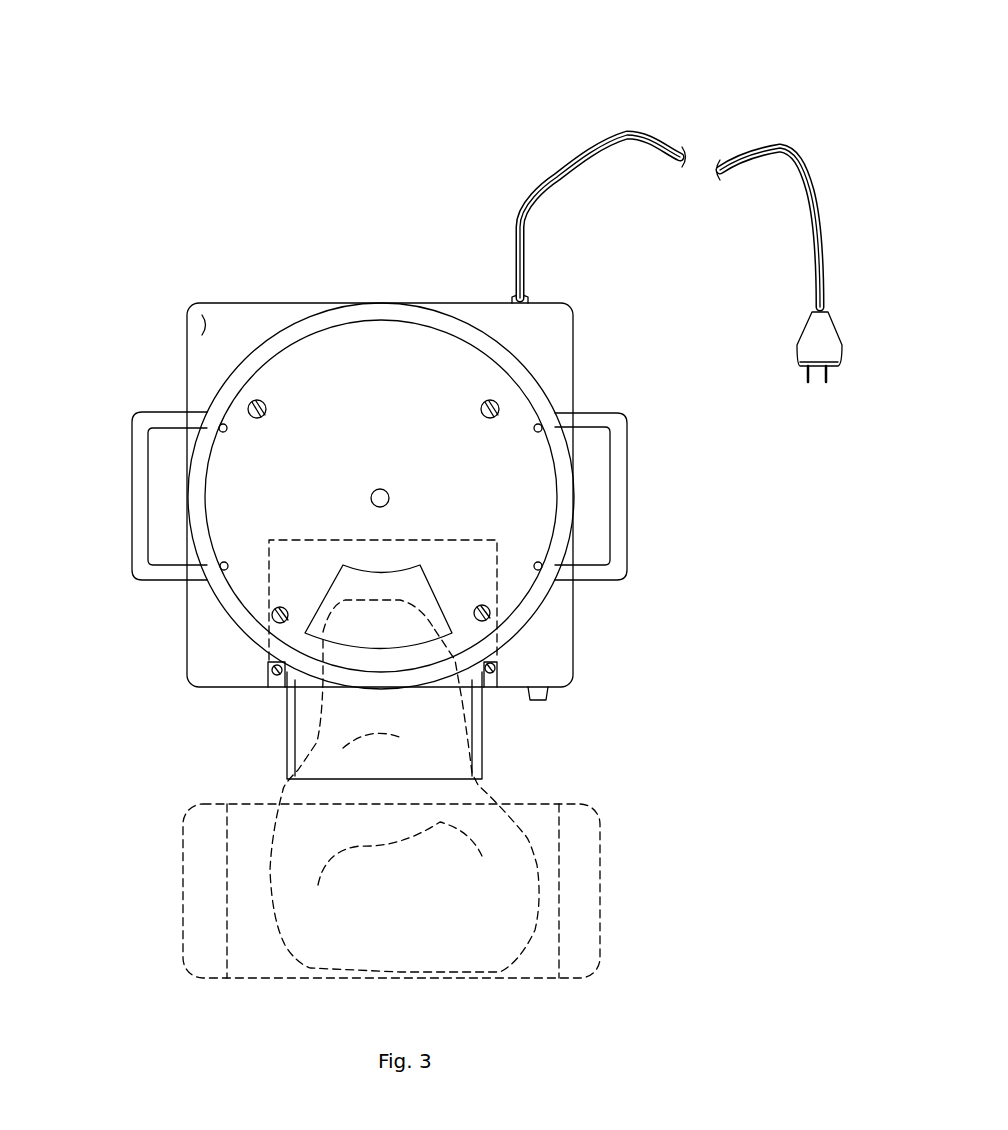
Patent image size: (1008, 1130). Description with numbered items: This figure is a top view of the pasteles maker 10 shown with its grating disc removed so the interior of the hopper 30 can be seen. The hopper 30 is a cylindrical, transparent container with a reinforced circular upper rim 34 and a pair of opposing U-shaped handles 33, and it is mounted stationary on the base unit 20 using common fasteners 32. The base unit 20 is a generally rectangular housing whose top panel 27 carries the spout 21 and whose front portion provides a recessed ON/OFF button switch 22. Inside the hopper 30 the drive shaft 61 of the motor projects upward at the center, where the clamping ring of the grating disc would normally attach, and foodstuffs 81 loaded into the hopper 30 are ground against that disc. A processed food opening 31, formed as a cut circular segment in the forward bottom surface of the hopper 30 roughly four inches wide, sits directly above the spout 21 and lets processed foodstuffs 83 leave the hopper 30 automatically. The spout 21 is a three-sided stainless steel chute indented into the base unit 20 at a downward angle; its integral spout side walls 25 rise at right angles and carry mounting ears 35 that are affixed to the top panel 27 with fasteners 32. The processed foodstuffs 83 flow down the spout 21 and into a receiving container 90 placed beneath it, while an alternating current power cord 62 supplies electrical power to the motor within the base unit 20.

The pasteles maker 10 is at (150, 112).
The base unit 20 is at (156, 632).
The spout 21 is at (415, 540).
The ON/OFF button switch 22 is at (546, 700).
The spout side wall 25 is at (283, 713).
The top panel 27 is at (200, 327).
The hopper 30 is at (287, 325).
The processed food opening 31 is at (418, 648).
The fastener 32 is at (282, 607).
The handle 33 is at (132, 470).
The rim 34 is at (531, 398).
The mounting ear 35 is at (497, 663).
The drive shaft 61 is at (376, 488).
The alternating current (AC) power cord 62 is at (752, 150).
The foodstuffs 81 is at (373, 600).
The processed foodstuffs 83 is at (293, 840).
The container 90 is at (183, 960).